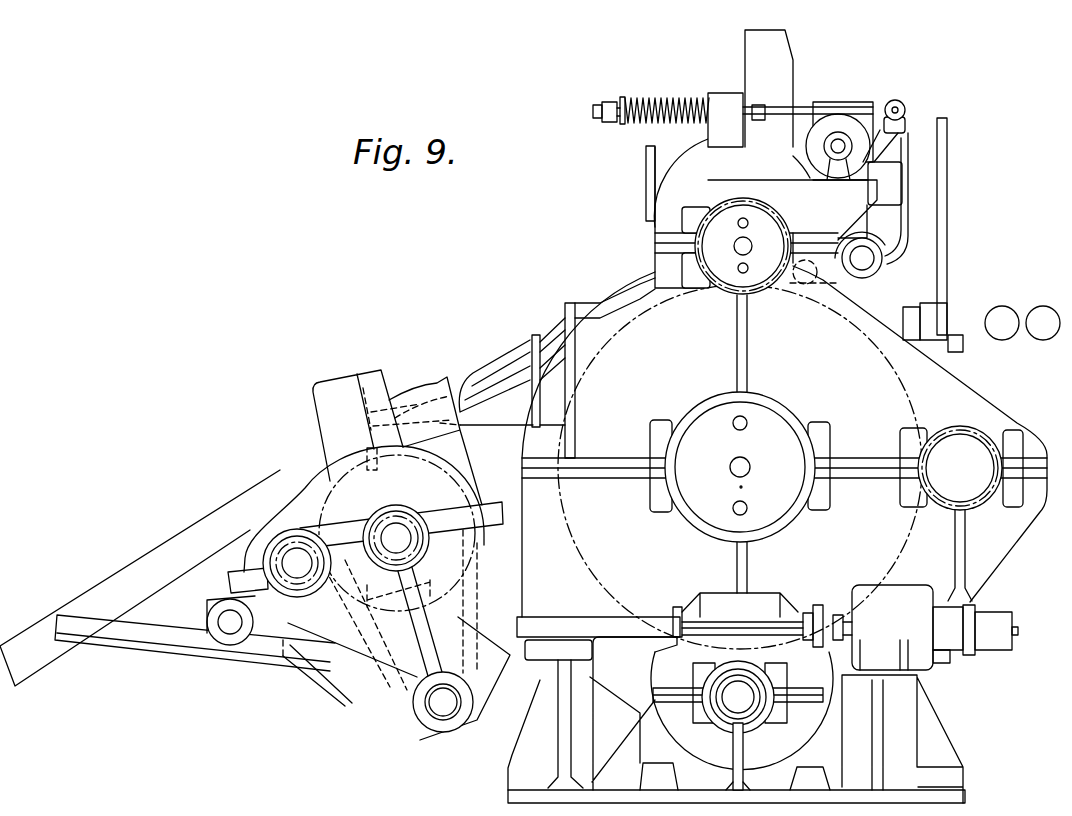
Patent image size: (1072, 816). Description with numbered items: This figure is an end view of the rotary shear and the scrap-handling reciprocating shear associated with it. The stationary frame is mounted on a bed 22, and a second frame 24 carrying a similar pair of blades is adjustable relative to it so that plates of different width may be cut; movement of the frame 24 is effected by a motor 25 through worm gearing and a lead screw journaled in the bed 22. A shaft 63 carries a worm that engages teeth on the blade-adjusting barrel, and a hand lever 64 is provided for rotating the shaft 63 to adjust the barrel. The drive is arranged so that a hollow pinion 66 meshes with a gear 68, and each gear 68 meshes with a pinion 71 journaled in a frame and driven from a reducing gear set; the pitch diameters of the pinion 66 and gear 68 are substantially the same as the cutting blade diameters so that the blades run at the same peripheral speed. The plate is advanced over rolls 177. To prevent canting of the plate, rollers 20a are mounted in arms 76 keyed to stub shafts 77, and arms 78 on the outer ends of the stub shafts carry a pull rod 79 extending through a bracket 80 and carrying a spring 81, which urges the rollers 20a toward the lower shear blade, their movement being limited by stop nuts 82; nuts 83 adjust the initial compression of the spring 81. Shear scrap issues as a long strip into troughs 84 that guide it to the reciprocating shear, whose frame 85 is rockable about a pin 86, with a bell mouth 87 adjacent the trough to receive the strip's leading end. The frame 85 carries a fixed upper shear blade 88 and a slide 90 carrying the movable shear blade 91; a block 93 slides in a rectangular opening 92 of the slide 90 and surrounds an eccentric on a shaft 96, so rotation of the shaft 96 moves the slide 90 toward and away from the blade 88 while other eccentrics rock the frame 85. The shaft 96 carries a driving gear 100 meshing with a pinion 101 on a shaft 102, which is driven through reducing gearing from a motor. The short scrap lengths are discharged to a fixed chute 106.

The rollers 20a is at (812, 282).
The bed 22 is at (878, 740).
The frame 24 is at (970, 383).
The motor 25 is at (910, 627).
The shaft 63 is at (963, 347).
The hand lever 64 is at (942, 211).
The hollow pinion 66 is at (790, 237).
The gear 68 is at (900, 562).
The pinion 71 is at (973, 508).
The arms 76 is at (838, 286).
The stub shafts 77 is at (870, 264).
The arms 78 is at (907, 120).
The pull rod 79 is at (806, 110).
The bracket 80 is at (722, 94).
The spring 81 is at (662, 99).
The stop nuts 82 is at (760, 104).
The nuts 83 is at (603, 104).
The troughs 84 is at (500, 352).
The frame 85 is at (363, 372).
The pin 86 is at (444, 715).
The bell mouth 87 is at (438, 384).
The fixed upper shear blade 88 is at (380, 388).
The slide 90 is at (348, 703).
The movable shear blade 91 is at (367, 448).
The rectangular opening 92 is at (476, 585).
The block 93 is at (415, 622).
The shaft 96 is at (397, 535).
The driving gear 100 is at (473, 540).
The pinion 101 is at (301, 543).
The shaft 102 is at (300, 572).
The fixed chute 106 is at (139, 559).
The rolls 177 is at (1033, 307).